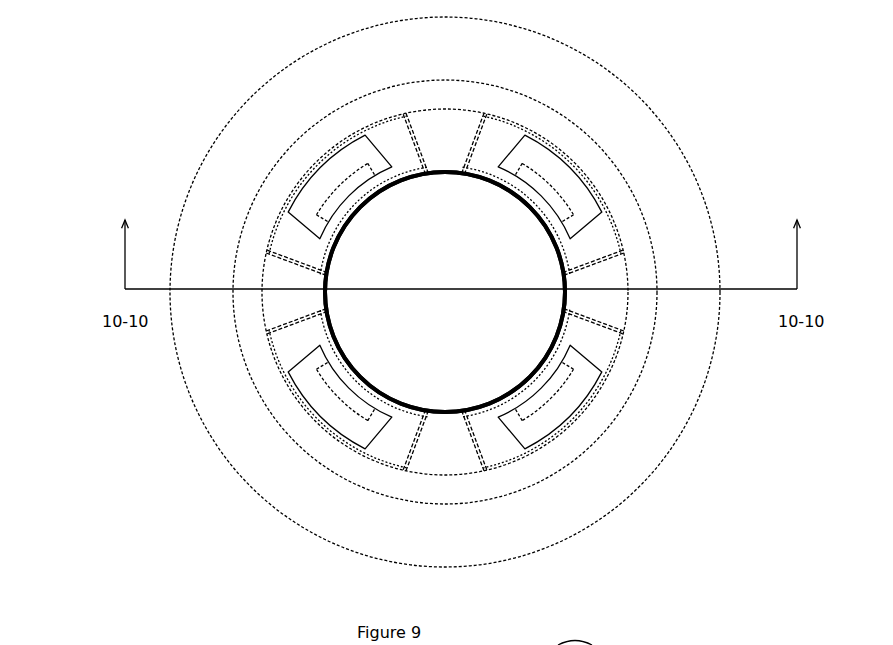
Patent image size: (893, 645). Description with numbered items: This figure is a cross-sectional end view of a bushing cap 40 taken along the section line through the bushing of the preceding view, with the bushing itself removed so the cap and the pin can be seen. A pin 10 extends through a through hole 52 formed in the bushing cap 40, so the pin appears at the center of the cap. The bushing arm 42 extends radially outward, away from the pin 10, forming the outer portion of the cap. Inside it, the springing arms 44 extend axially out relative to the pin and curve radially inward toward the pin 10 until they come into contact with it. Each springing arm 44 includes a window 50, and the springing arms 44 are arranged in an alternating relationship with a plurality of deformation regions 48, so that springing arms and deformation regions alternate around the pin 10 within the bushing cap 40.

The pin 10 is at (442, 348).
The bushing cap 40 is at (122, 88).
The bushing arm 42 is at (252, 148).
The springing arms 44 is at (582, 250).
The deformation regions 48 is at (445, 137).
The window 50 is at (543, 433).
The through hole 52 is at (503, 320).